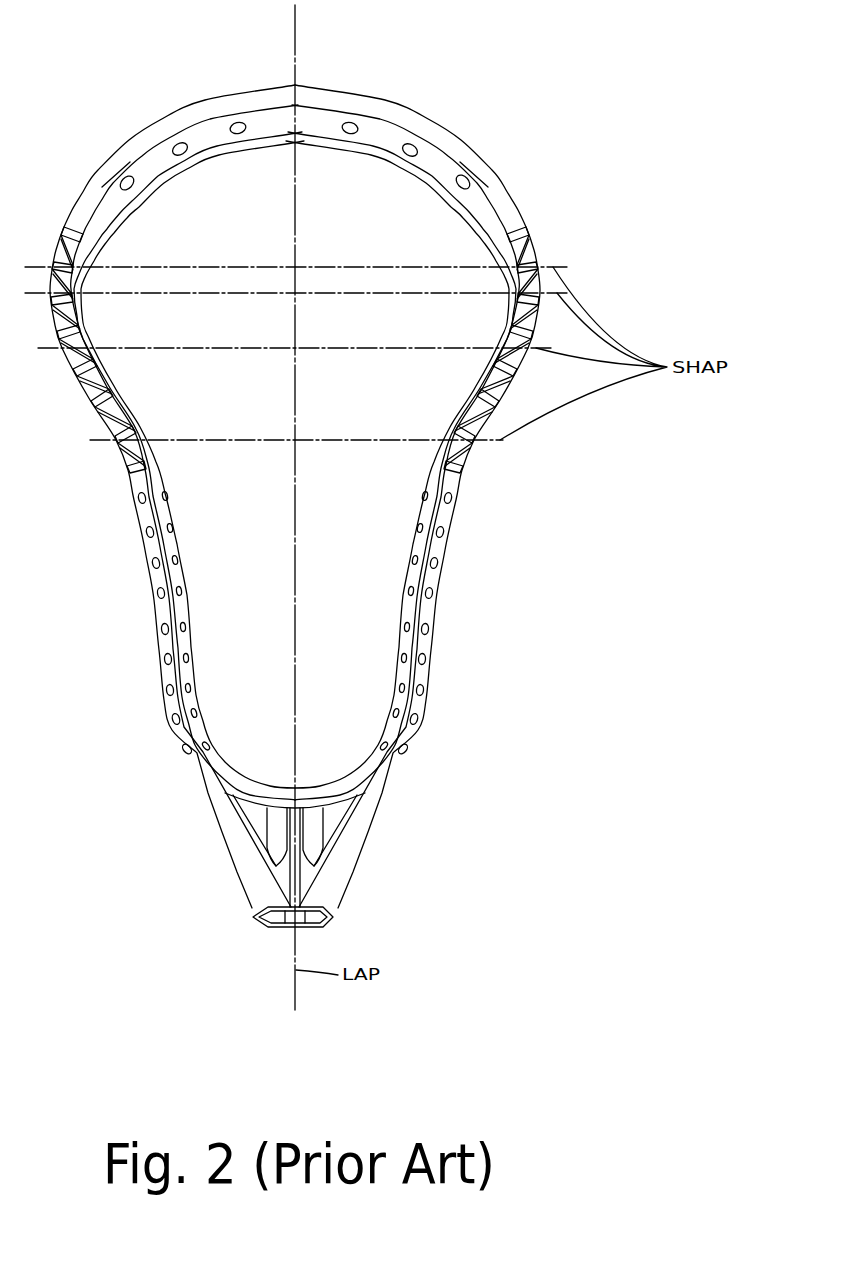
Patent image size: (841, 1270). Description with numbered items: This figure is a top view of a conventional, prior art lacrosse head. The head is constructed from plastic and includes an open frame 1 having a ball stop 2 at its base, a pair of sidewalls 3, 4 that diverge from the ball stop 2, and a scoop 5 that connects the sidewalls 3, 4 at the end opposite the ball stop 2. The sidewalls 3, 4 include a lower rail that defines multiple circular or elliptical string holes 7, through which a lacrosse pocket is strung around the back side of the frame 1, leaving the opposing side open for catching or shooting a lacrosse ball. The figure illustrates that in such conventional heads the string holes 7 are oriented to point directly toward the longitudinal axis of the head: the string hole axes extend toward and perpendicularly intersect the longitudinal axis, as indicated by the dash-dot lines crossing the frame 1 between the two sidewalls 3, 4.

The open frame 1 is at (126, 78).
The ball stop 2 is at (318, 822).
The sidewall 3 is at (155, 597).
The sidewall 4 is at (437, 583).
The scoop 5 is at (388, 135).
The string holes 7 is at (433, 562).